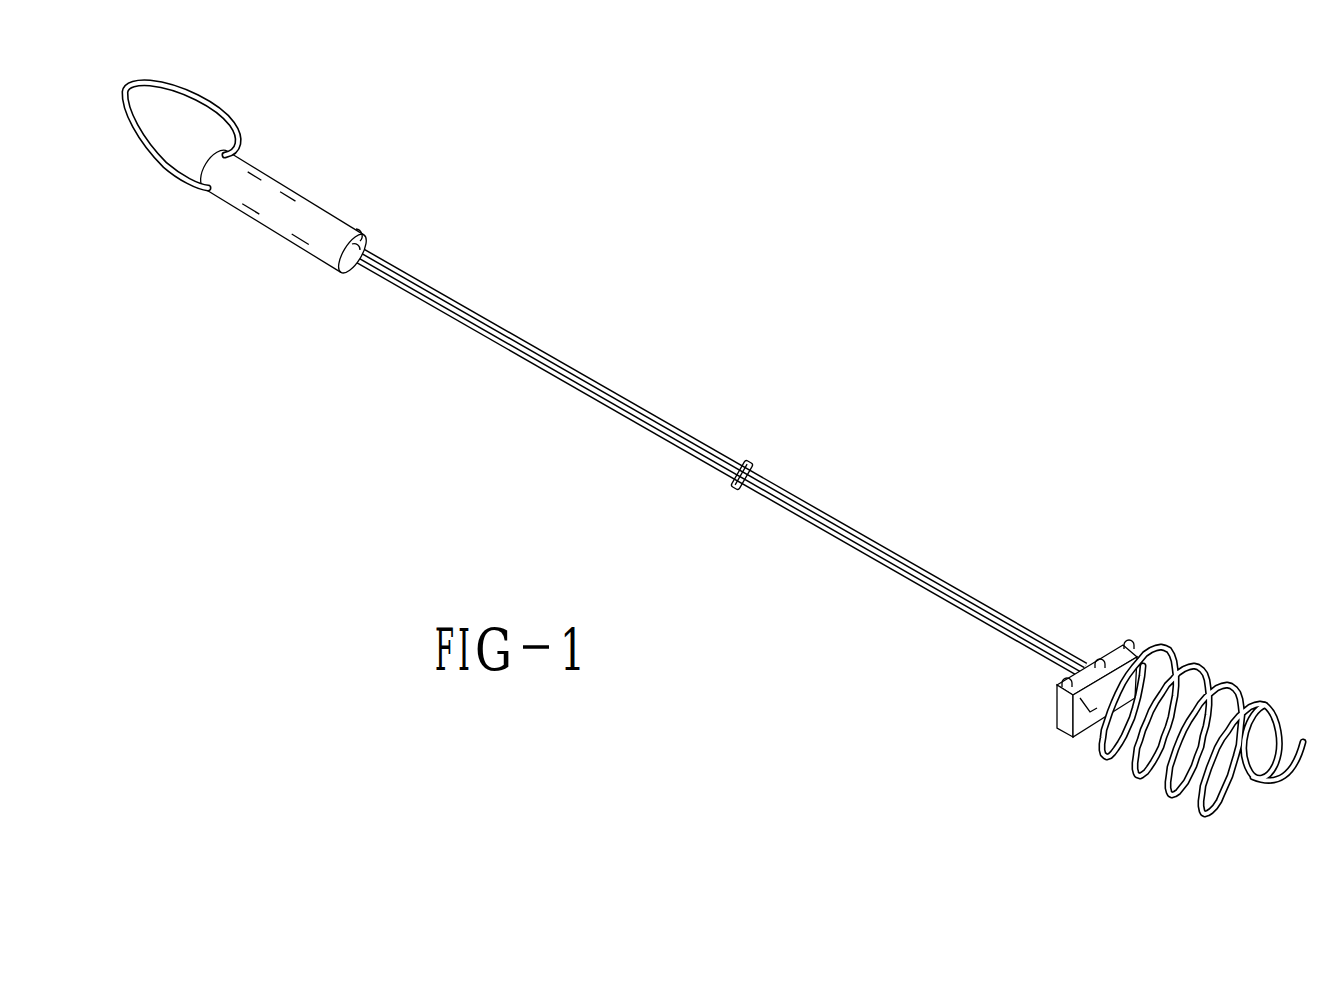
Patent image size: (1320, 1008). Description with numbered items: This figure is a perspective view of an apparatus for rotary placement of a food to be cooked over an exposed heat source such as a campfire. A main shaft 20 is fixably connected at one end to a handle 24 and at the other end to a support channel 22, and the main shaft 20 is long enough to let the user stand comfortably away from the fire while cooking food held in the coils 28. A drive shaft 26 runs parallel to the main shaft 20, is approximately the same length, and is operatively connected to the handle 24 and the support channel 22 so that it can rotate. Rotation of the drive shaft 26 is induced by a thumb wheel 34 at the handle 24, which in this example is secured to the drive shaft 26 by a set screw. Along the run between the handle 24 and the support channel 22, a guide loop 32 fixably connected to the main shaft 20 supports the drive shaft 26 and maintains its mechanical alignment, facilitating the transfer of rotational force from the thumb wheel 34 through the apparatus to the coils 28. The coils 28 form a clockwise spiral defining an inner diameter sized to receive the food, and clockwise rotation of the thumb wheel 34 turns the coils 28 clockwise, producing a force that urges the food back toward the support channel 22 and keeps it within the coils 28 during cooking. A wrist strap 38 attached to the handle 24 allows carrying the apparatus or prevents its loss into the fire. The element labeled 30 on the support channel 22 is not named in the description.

The main shaft 20 is at (633, 413).
The support channel 22 is at (1057, 712).
The handle 24 is at (310, 210).
The drive shaft 26 is at (597, 378).
The coils 28 is at (1237, 690).
The crimp terminal 30 is at (1115, 648).
The guide loop 32 is at (743, 462).
The thumb wheel 34 is at (353, 233).
The wrist strap 38 is at (185, 93).